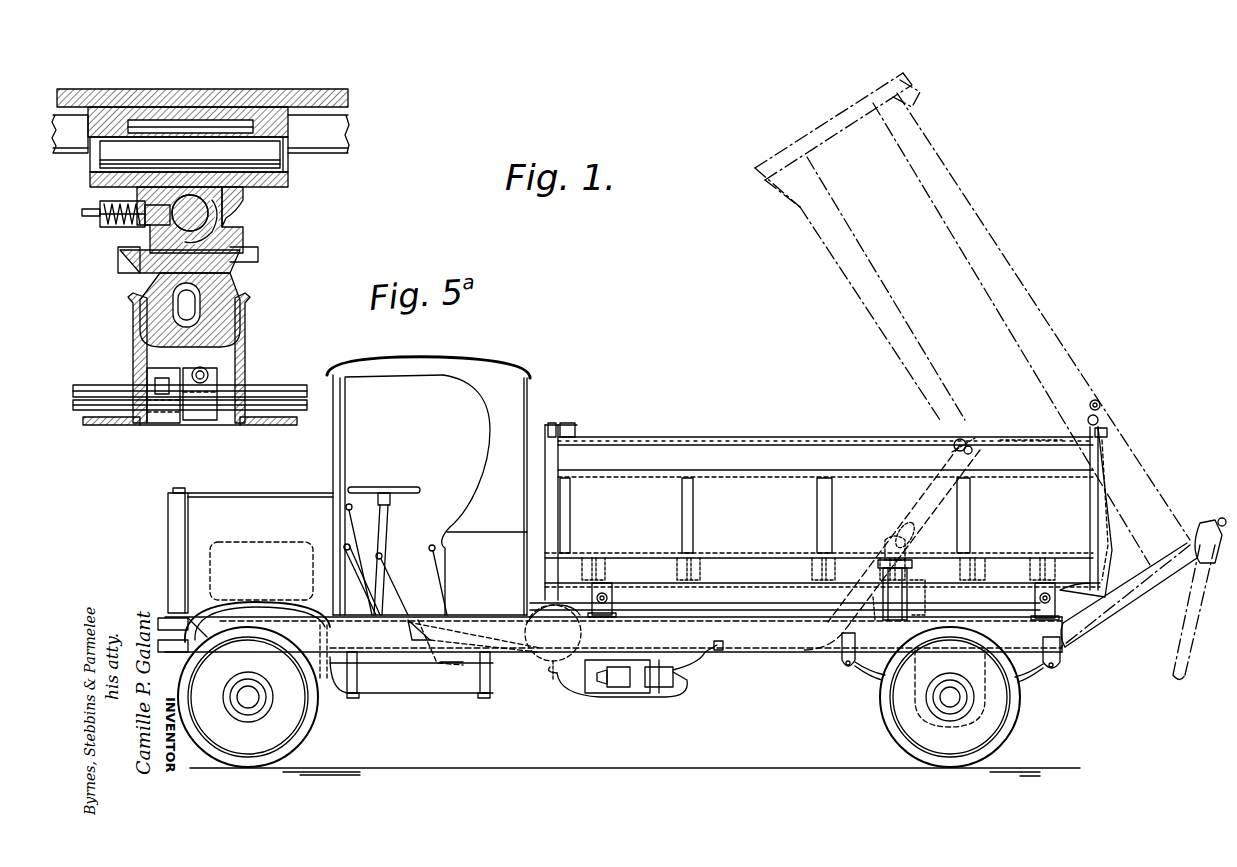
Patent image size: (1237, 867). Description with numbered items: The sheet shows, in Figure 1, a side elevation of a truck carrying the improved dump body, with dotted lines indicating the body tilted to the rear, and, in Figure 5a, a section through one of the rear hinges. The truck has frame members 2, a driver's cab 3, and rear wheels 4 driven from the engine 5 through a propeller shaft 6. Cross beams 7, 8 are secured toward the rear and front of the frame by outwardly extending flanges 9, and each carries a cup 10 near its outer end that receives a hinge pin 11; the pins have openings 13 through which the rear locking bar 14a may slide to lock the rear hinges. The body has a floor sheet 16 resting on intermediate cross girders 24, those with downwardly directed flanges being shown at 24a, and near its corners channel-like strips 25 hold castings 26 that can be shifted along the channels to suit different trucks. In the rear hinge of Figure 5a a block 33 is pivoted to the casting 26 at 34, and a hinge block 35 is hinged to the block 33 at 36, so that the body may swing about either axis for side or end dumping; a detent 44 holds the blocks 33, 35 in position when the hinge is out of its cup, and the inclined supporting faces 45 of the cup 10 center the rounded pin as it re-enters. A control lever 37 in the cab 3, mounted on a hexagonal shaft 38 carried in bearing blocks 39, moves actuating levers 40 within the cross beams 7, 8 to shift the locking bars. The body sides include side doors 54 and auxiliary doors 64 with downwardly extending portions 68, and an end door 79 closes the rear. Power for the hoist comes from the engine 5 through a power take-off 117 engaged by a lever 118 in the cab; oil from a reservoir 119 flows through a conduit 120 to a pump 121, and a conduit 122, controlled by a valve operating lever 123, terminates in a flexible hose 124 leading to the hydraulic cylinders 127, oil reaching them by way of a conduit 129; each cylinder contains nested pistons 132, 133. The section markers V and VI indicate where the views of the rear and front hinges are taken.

In FIG. 1, the frame members 2 is at (778, 640).
In FIG. 1, the driver's cab 3 is at (428, 486).
In FIG. 1, the rear wheels 4 is at (890, 712).
In FIG. 1, the engine 5 is at (263, 555).
In FIG. 1, the propeller shaft 6 is at (822, 650).
In FIG. 5a, the rear cross beam 7 is at (140, 350).
In FIG. 1, the rear cross beam 7 is at (1035, 600).
In FIG. 1, the front cross beam 8 is at (612, 600).
In FIG. 5a, the flanges 9 is at (104, 426).
In FIG. 5a, the cup 10 is at (243, 262).
In FIG. 5a, the hinge pins 11 is at (213, 348).
In FIG. 5a, the openings 13 is at (167, 347).
In FIG. 5a, the rear locking bar 14a is at (183, 312).
In FIG. 5a, the floor sheet 16 is at (290, 90).
In FIG. 1, the intermediate cross girders 24 is at (700, 572).
In FIG. 1, the intermediate cross girders with downward flanges 24a is at (812, 575).
In FIG. 5a, the channel-like strips 25 is at (338, 136).
In FIG. 5a, the castings 26 is at (288, 121).
In FIG. 5a, the blocks 33 is at (140, 190).
In FIG. 5a, the pivot 34 is at (189, 154).
In FIG. 5a, the hinge blocks 35 is at (218, 112).
In FIG. 5a, the hinge pins 36 is at (214, 230).
In FIG. 1, the control lever 37 is at (443, 542).
In FIG. 1, the hexagonal shaft 38 is at (762, 600).
In FIG. 5a, the bearing blocks 39 is at (152, 414).
In FIG. 5a, the actuating lever 40 is at (212, 360).
In FIG. 5a, the detent 44 is at (117, 226).
In FIG. 5a, the supporting faces 45 is at (240, 278).
In FIG. 1, the side doors 54 is at (765, 515).
In FIG. 1, the auxiliary doors 64 is at (797, 453).
In FIG. 1, the downwardly extending portions 68 is at (797, 478).
In FIG. 1, the end door 79 is at (1112, 512).
In FIG. 1, the power take-off mechanism 117 is at (620, 684).
In FIG. 1, the lever 118 is at (430, 550).
In FIG. 1, the reservoir 119 is at (545, 625).
In FIG. 1, the conduit 120 is at (677, 692).
In FIG. 1, the pump 121 is at (658, 688).
In FIG. 1, the conduit 122 is at (703, 664).
In FIG. 1, the valve operating lever 123 is at (413, 597).
In FIG. 1, the flexible hose 124 is at (880, 578).
In FIG. 1, the hydraulic cylinders 127 is at (912, 598).
In FIG. 1, the conduit 129 is at (868, 597).
In FIG. 1, the piston 132 is at (913, 533).
In FIG. 1, the piston 133 is at (950, 500).
In FIG. 1, the section line V— V is at (1045, 583).
In FIG. 1, the section line VI— VI is at (600, 583).